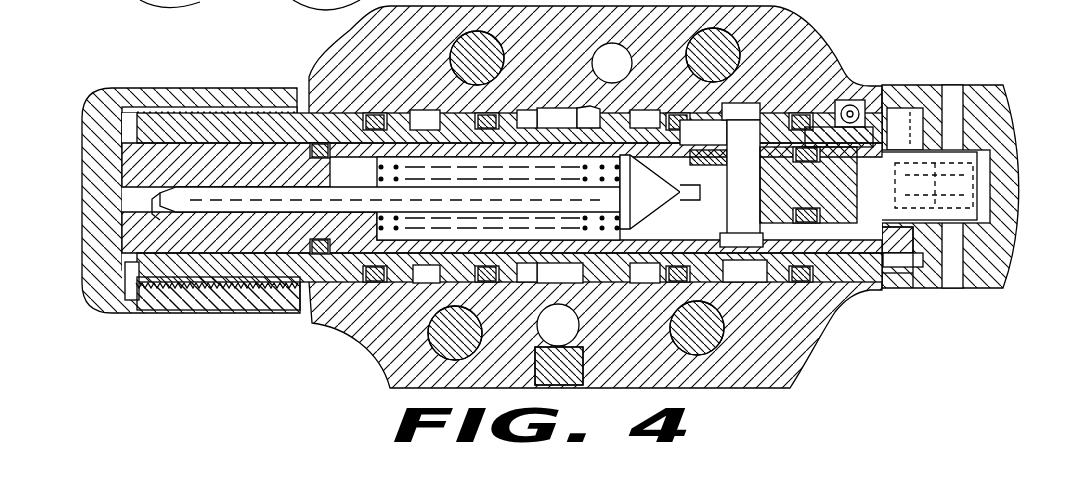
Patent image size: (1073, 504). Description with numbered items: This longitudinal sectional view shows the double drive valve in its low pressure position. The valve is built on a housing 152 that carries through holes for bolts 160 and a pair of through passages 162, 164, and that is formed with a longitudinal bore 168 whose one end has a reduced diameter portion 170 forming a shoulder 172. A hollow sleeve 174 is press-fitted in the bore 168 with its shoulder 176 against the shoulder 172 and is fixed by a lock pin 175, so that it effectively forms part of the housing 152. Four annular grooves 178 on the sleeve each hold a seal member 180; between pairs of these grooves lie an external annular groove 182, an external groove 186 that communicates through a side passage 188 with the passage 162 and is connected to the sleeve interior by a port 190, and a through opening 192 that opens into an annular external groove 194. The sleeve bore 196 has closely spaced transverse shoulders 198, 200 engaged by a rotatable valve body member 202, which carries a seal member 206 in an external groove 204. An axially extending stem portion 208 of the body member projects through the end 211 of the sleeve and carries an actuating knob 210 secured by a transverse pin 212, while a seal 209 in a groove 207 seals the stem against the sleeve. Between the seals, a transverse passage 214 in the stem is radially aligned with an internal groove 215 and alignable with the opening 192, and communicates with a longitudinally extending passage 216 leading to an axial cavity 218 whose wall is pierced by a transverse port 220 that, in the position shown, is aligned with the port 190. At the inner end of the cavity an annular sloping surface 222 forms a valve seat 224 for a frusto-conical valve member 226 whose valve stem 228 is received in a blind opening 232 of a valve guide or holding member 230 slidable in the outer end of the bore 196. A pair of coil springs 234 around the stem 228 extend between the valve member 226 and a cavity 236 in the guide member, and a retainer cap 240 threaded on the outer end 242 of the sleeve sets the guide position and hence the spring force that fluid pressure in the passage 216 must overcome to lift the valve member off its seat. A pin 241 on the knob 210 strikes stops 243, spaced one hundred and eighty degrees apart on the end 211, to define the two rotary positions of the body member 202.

The housing 152 is at (818, 326).
The bolts 160 is at (452, 52).
The through passage 162 is at (580, 330).
The through passage 164 is at (614, 46).
The bore 168 is at (780, 96).
The reduced diameter portion 170 is at (875, 112).
The shoulder 172 is at (860, 288).
The hollow sleeve 174 is at (640, 107).
The lock pin 175 is at (880, 112).
The shoulder 176 is at (842, 104).
The annular grooves 178 is at (376, 114).
The seal member 180 is at (680, 92).
The external annular groove 182 is at (410, 288).
The external groove 186 is at (548, 108).
The side passage 188 is at (580, 294).
The port 190 is at (540, 279).
The through opening 192 is at (858, 247).
The annular external groove 194 is at (732, 292).
The bore 196 is at (217, 148).
The transverse shoulder 198 is at (703, 132).
The transverse shoulder 200 is at (741, 111).
The valve body member 202 is at (794, 213).
The external groove 204 is at (703, 213).
The seal member 206 is at (706, 163).
The groove 207 is at (916, 186).
The stem portion 208 is at (858, 178).
The seal 209 is at (822, 106).
The actuating knob 210 is at (988, 91).
The end 211 is at (918, 253).
The pin 212 is at (948, 90).
The transverse passage 214 is at (808, 185).
The internal groove 215 is at (743, 201).
The longitudinally extending passage 216 is at (794, 176).
The axial cavity 218 is at (517, 205).
The transverse port 220 is at (553, 243).
The annular sloping surface 222 is at (636, 268).
The valve seat 224 is at (650, 192).
The frusto-conical valve member 226 is at (620, 112).
The valve stem 228 is at (386, 203).
The valve guide or holding member 230 is at (125, 208).
The blind opening 232 is at (502, 198).
The coil springs 234 is at (475, 199).
The cavity 236 is at (372, 169).
The retainer cap 240 is at (197, 305).
The pin 241 is at (905, 129).
The outer end 242 is at (143, 280).
The stops 243 is at (987, 134).